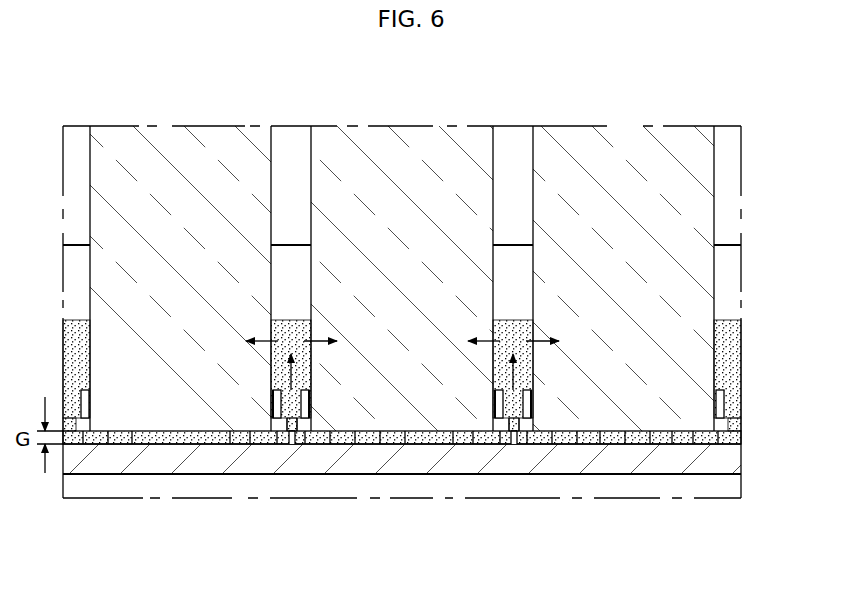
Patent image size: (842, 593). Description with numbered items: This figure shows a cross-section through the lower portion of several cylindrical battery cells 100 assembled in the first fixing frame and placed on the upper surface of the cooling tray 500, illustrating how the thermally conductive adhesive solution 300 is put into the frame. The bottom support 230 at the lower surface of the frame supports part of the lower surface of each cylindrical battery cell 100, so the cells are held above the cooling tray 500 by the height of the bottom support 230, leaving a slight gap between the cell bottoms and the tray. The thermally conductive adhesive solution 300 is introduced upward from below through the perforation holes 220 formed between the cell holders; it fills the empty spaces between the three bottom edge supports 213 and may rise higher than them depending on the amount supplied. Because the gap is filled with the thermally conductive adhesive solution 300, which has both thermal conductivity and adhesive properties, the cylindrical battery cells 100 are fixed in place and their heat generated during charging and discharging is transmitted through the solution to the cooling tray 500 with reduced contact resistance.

The cylindrical battery cell 100 is at (185, 165).
The bottom edge support 213 is at (276, 401).
The perforation hole 220 is at (291, 433).
The bottom support 230 is at (338, 446).
The thermally conductive adhesive solution 300 is at (731, 358).
The cooling tray 500 is at (462, 462).